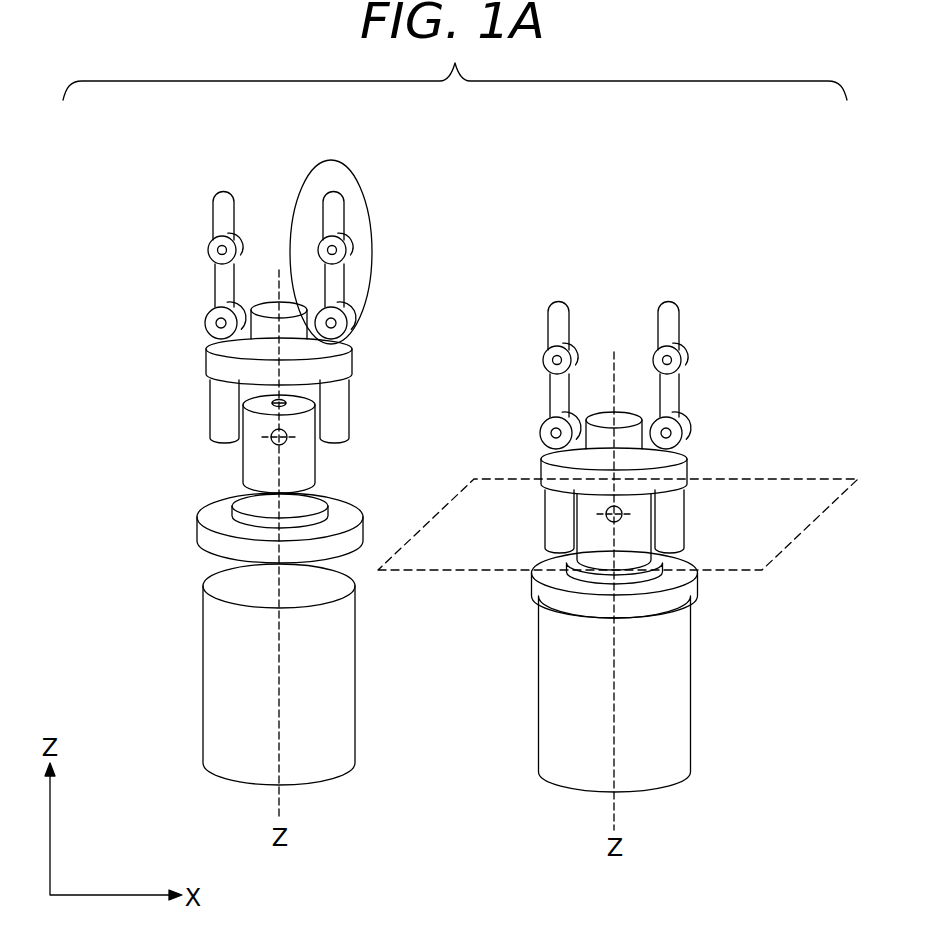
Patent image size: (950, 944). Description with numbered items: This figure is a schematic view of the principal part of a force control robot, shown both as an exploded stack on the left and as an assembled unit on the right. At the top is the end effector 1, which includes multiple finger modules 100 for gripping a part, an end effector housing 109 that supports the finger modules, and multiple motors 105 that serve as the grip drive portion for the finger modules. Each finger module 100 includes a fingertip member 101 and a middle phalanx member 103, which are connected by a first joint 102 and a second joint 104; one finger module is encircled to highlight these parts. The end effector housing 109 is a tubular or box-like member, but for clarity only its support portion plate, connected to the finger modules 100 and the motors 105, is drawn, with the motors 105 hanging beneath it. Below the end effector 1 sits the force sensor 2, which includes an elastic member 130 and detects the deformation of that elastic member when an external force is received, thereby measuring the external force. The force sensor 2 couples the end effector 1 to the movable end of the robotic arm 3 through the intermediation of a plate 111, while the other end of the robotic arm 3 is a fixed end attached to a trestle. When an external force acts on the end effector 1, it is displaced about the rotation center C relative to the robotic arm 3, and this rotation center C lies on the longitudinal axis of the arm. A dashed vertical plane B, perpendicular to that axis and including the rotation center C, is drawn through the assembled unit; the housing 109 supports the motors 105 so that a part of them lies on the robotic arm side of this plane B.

The end effector 1 is at (173, 175).
The force sensor 2 is at (291, 444).
The robotic arm 3 is at (292, 639).
The finger module 100 is at (308, 183).
The fingertip member 101 is at (341, 203).
The first joint 102 is at (350, 243).
The middle phalanx member 103 is at (342, 273).
The second joint 104 is at (352, 313).
The motor 105 is at (343, 412).
The end effector housing 109 is at (350, 361).
The plate 111 is at (342, 545).
The elastic member 130 is at (313, 463).
The rotation center C is at (290, 430).
The vertical plane B is at (782, 497).